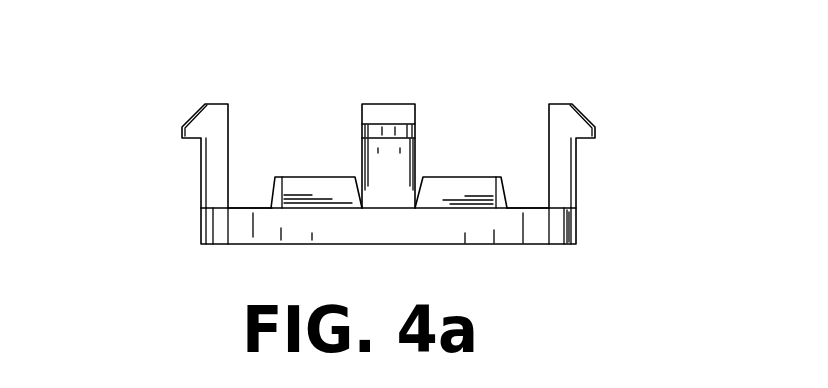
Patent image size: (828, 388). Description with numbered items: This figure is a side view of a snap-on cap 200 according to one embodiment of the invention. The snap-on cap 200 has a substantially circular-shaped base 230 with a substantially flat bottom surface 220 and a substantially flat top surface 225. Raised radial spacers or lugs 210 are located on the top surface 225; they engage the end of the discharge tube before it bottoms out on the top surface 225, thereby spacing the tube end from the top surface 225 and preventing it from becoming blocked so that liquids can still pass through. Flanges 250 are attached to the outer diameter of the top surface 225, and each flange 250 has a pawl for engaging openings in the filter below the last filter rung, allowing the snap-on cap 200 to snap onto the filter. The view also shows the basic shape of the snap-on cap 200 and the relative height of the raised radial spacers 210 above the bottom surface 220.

The snap-on cap 200 is at (164, 186).
The raised radial spacers 210 is at (314, 177).
The bottom surface 220 is at (551, 246).
The top surface 225 is at (243, 208).
The base 230 is at (557, 223).
The flanges 250 is at (195, 113).